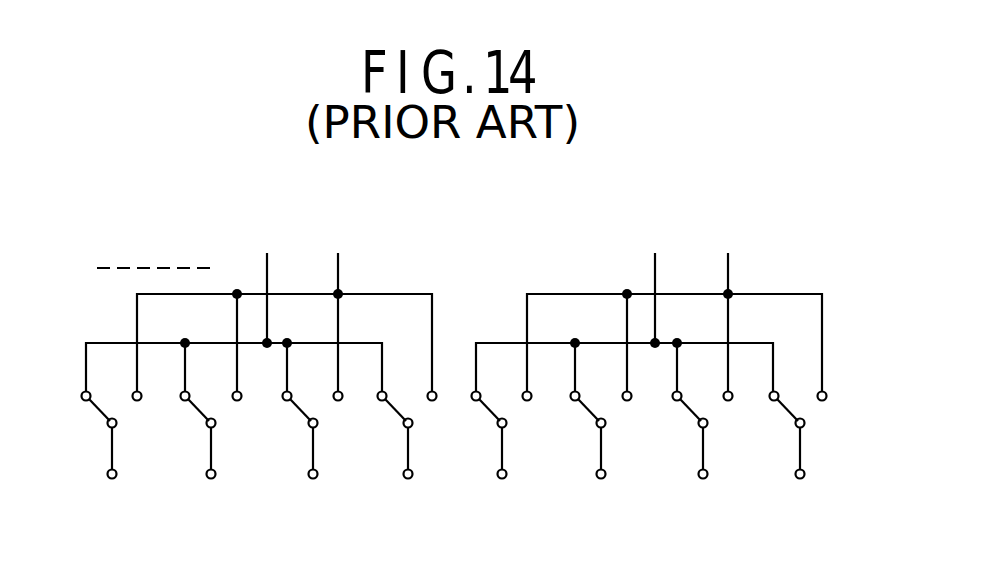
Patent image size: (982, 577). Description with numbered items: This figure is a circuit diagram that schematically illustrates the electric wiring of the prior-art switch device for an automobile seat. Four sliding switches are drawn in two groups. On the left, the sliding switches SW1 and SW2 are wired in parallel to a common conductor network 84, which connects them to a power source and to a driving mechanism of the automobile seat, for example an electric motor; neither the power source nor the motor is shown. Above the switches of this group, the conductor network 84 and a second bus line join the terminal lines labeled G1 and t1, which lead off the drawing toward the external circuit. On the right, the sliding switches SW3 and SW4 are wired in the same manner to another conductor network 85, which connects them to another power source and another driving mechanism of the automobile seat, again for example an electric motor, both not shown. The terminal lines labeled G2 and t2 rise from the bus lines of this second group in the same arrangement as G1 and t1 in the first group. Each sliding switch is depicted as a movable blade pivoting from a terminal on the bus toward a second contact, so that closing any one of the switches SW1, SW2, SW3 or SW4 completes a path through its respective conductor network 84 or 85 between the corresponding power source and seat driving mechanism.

The conductor network 84 is at (369, 343).
The another conductor network 85 is at (761, 343).
The gate terminal G1 is at (270, 279).
The terminal t1 is at (341, 303).
The gate terminal G2 is at (658, 279).
The terminal t2 is at (731, 303).
The sliding switch SW1 is at (162, 456).
The sliding switch SW2 is at (360, 456).
The sliding switch SW3 is at (552, 456).
The sliding switch SW4 is at (750, 456).